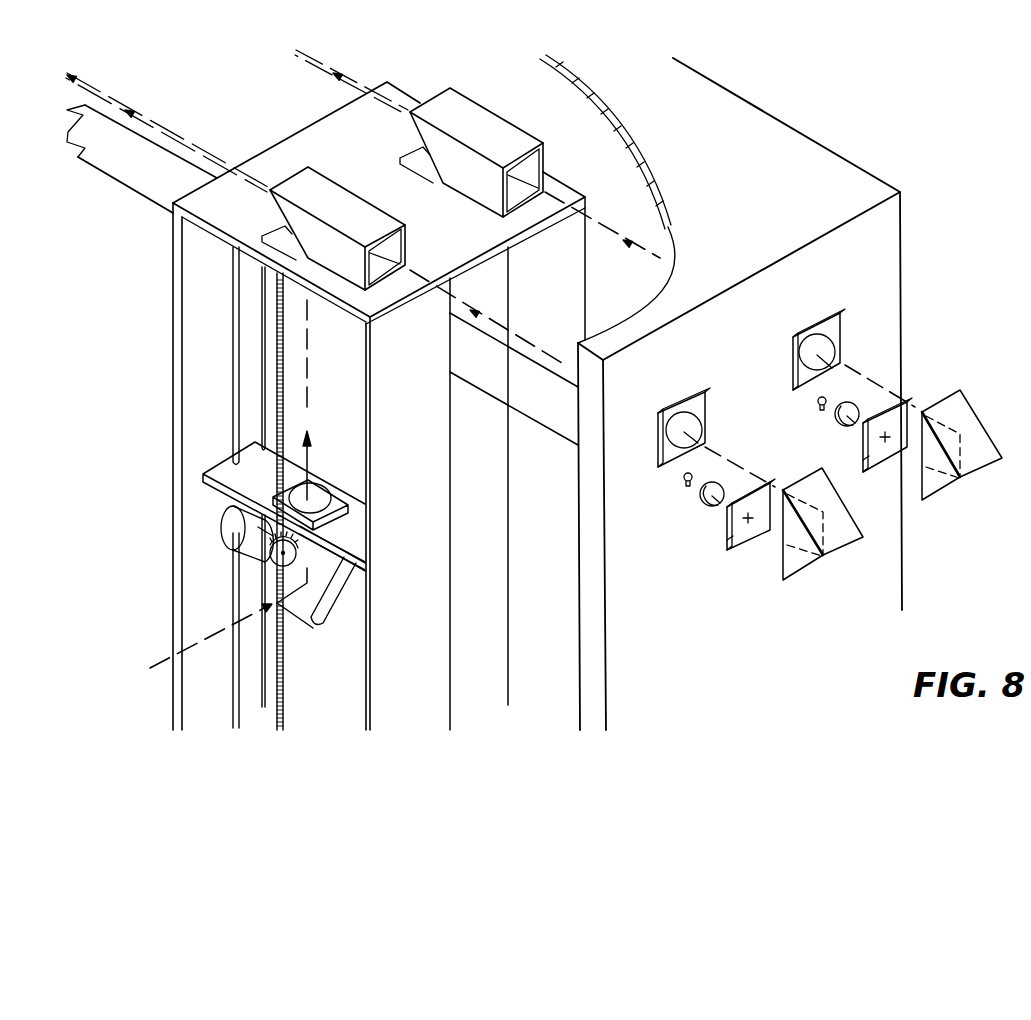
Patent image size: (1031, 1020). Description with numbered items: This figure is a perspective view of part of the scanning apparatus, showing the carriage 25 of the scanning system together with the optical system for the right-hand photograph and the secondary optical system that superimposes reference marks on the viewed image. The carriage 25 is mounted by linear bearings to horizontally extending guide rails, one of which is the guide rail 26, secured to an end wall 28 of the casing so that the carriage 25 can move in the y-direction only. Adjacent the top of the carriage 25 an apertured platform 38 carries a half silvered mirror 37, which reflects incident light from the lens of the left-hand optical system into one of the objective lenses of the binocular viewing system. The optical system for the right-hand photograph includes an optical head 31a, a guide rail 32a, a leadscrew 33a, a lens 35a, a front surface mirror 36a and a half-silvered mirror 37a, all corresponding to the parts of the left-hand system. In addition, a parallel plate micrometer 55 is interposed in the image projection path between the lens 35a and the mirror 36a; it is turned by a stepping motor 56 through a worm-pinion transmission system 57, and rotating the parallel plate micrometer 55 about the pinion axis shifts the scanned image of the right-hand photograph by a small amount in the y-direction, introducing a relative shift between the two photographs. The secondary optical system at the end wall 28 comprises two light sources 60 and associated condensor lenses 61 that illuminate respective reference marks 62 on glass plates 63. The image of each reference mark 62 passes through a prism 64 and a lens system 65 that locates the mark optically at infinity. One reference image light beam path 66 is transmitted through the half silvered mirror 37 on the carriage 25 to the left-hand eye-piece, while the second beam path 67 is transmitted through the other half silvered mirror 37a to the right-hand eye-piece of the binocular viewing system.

The carriage 25 is at (173, 372).
The guide rail 26 is at (113, 157).
The end wall 28 is at (760, 632).
The optical head 31a is at (218, 467).
The guide rail 32a is at (238, 685).
The leadscrew 33a is at (285, 690).
The lens 35a is at (318, 492).
The front surface mirror 36a is at (318, 628).
The half silvered mirror 37 is at (436, 88).
The half-silvered mirror 37a is at (305, 164).
The apertured platform 38 is at (343, 116).
The parallel plate micrometer 55 is at (325, 555).
The stepping motor 56 is at (230, 525).
The worm-pinion transmission system 57 is at (278, 551).
The light source 60 is at (681, 482).
The condensor lens 61 is at (703, 508).
The reference mark 62 is at (746, 527).
The glass plate 63 is at (727, 537).
The prism 64 is at (820, 565).
The lens system 65 is at (695, 418).
The reference image light beam path 66 is at (640, 246).
The reference image light beam path 67 is at (530, 342).